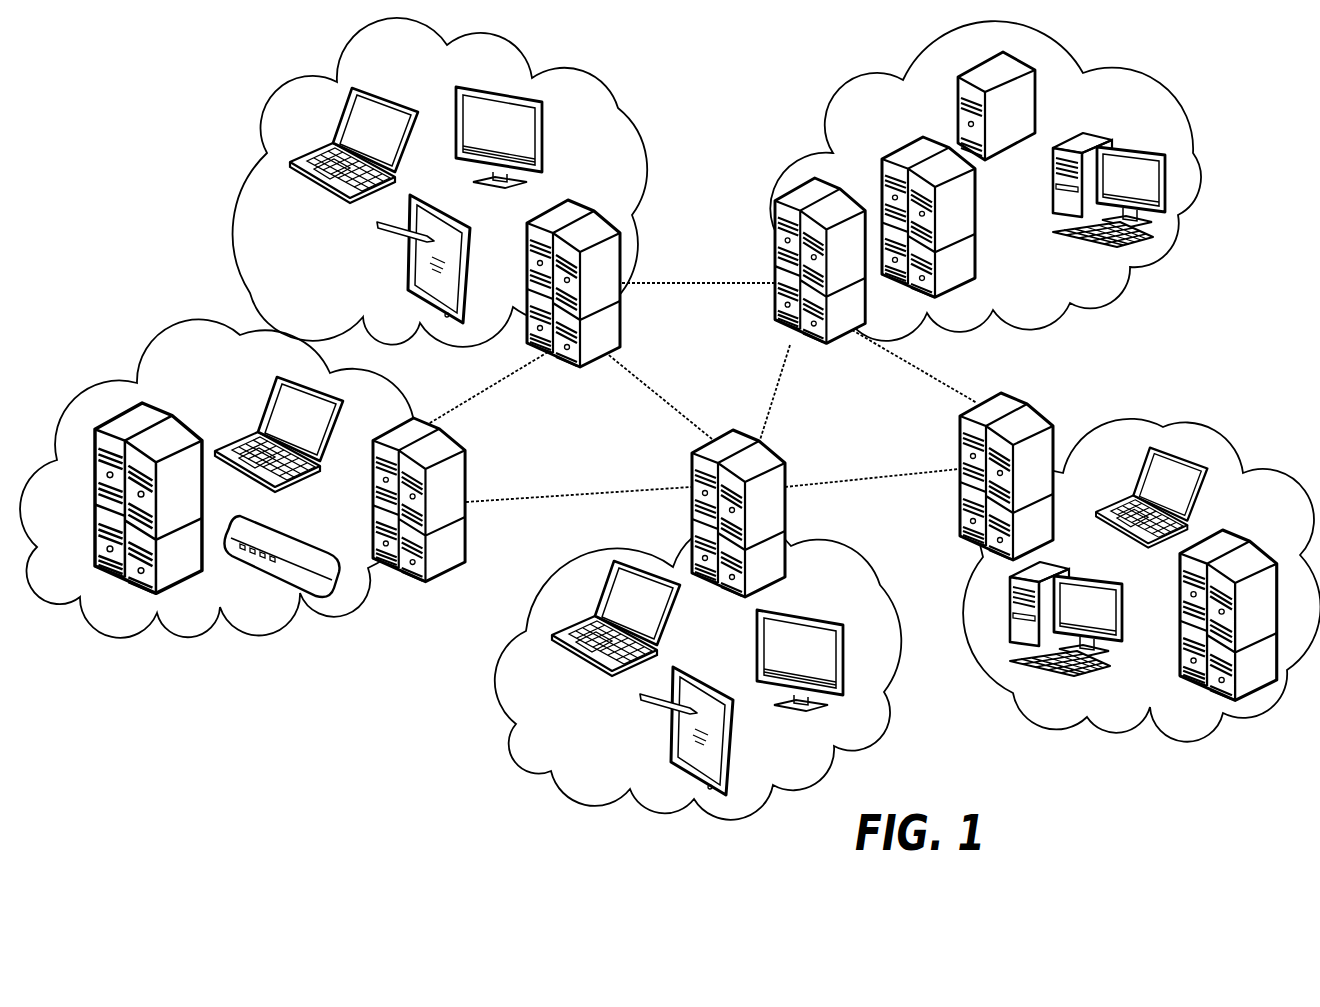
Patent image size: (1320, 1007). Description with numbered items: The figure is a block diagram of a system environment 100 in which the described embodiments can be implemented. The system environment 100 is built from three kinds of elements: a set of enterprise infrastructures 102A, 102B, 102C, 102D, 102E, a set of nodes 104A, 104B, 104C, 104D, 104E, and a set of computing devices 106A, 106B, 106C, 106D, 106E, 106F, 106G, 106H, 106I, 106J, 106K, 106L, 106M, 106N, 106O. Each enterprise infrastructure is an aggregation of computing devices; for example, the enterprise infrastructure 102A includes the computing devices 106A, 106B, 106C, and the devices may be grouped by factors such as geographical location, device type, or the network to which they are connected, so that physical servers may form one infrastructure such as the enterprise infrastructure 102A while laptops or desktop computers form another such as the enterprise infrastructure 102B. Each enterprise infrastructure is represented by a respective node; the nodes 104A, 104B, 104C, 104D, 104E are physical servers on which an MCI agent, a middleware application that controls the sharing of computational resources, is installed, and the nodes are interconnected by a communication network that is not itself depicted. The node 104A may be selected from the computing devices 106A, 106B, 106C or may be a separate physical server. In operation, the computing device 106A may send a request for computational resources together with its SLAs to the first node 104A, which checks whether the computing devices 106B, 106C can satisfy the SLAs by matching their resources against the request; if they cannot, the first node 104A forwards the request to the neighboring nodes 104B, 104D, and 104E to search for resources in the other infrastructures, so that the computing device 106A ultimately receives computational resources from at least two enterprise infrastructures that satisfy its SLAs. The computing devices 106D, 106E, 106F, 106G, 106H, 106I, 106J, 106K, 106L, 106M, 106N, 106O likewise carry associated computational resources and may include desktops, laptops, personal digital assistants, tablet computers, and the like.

The system environment 100 is at (1229, 105).
The enterprise infrastructure 102A is at (620, 103).
The enterprise infrastructure 102B is at (848, 110).
The enterprise infrastructure 102C is at (1148, 418).
The enterprise infrastructure 102D is at (876, 740).
The enterprise infrastructure 102E is at (177, 322).
The first node 104A is at (623, 270).
The node 104B is at (788, 193).
The node 104C is at (1033, 404).
The node 104D is at (734, 431).
The node 104E is at (445, 577).
The computing device 106A is at (398, 98).
The computing device 106B is at (543, 120).
The computing device 106C is at (410, 270).
The computing device 106D is at (1037, 108).
The computing device 106E is at (1047, 187).
The computing device 106F is at (977, 255).
The computing device 106G is at (1127, 633).
The computing device 106H is at (1203, 503).
The computing device 106I is at (1242, 547).
The computing device 106J is at (598, 664).
The computing device 106K is at (791, 610).
The computing device 106L is at (673, 740).
The computing device 106M is at (173, 417).
The computing device 106N is at (272, 403).
The computing device 106O is at (287, 537).